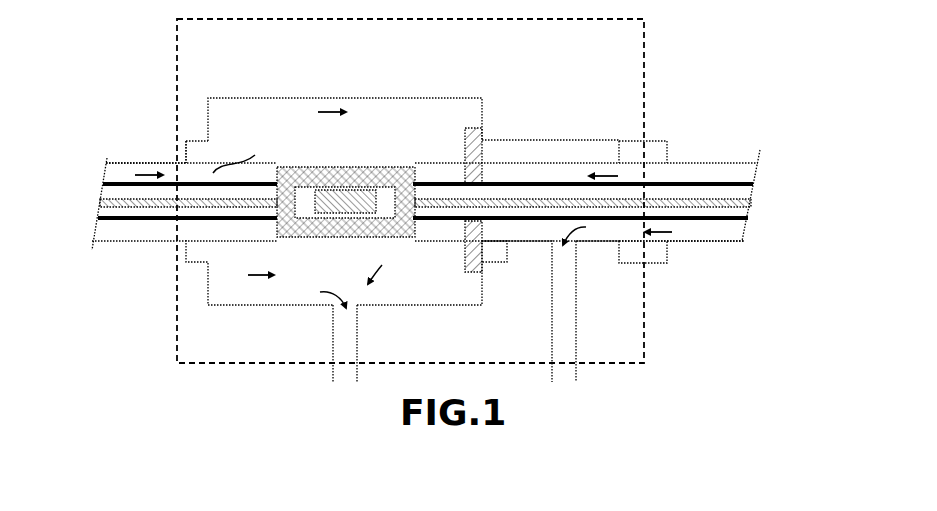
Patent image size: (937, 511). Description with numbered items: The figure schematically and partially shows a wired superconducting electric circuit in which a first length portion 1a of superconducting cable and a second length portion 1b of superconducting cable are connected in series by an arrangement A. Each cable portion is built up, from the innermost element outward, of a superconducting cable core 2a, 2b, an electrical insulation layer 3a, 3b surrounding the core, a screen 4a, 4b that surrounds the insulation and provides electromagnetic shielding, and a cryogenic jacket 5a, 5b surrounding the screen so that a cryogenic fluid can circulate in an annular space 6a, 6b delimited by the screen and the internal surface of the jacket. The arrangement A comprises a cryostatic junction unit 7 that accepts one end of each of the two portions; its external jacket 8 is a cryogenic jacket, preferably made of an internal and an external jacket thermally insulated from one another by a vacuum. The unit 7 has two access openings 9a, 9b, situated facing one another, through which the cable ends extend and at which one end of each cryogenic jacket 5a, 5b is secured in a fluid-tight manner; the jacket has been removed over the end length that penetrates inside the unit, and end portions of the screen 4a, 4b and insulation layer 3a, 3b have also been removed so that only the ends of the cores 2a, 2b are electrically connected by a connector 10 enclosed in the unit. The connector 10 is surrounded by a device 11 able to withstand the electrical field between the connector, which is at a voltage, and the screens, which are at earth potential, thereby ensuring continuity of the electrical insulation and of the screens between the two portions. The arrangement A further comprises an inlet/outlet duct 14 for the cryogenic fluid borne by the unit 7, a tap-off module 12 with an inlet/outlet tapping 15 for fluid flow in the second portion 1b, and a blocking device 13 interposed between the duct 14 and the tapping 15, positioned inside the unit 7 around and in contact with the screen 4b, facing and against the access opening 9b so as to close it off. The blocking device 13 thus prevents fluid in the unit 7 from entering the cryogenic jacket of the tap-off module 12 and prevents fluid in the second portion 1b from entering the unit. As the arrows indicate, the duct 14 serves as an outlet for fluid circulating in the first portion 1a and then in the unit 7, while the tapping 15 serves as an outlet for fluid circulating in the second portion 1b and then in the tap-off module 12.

The first length portion of superconducting cable 1a is at (175, 297).
The second length portion of superconducting cable 1b is at (745, 103).
The superconducting cable core 2a is at (162, 200).
The superconducting cable core 2b is at (690, 182).
The electrical insulation layer 3a is at (140, 208).
The electrical insulation layer 3b is at (712, 200).
The screen 4a is at (117, 222).
The screen 4b is at (735, 212).
The cryogenic jacket 5a is at (147, 162).
The cryogenic jacket 5b is at (703, 264).
The annular space 6a is at (113, 175).
The annular space 6b is at (733, 228).
The cryostatic junction unit 7 is at (280, 94).
The external jacket 8 is at (345, 98).
The access opening 9a is at (246, 153).
The access opening 9b is at (483, 170).
The connector 10 is at (345, 190).
The device 11 is at (378, 190).
The tap-off module 12 is at (563, 162).
The device for blocking the passage of cryogenic fluid 13 is at (472, 127).
The inlet/outlet duct 14 is at (358, 343).
The inlet/outlet tapping 15 is at (577, 311).
The arrangement A is at (178, 365).